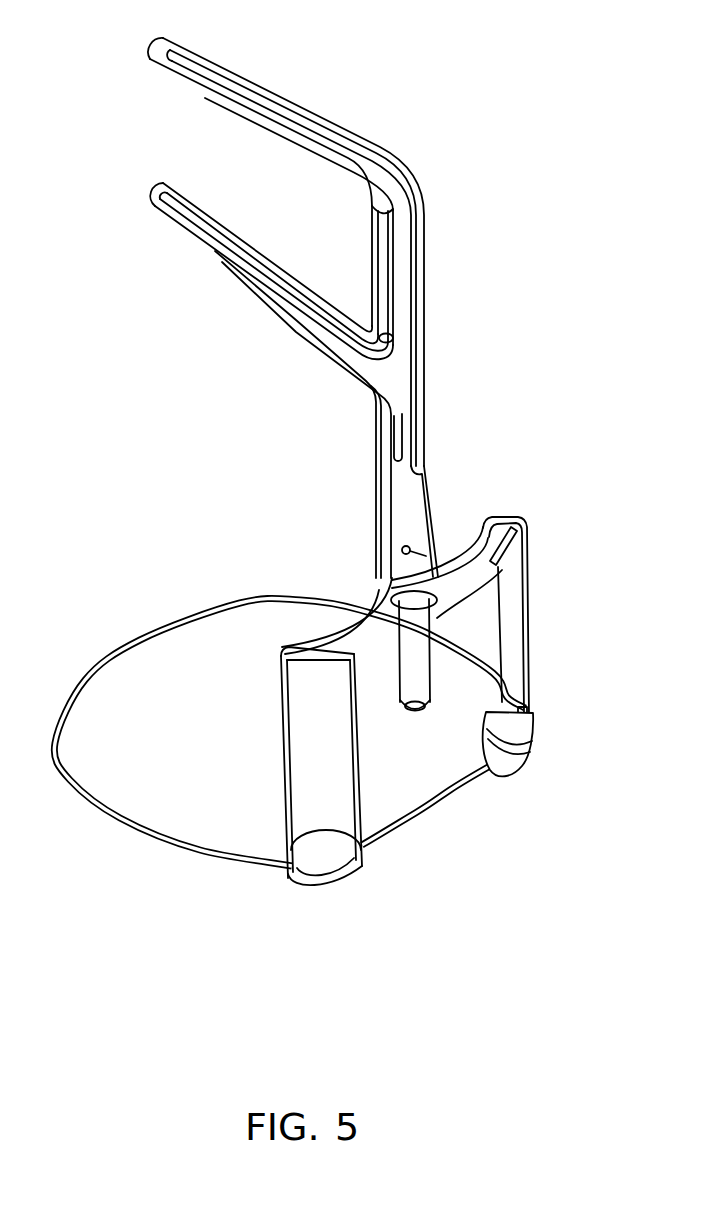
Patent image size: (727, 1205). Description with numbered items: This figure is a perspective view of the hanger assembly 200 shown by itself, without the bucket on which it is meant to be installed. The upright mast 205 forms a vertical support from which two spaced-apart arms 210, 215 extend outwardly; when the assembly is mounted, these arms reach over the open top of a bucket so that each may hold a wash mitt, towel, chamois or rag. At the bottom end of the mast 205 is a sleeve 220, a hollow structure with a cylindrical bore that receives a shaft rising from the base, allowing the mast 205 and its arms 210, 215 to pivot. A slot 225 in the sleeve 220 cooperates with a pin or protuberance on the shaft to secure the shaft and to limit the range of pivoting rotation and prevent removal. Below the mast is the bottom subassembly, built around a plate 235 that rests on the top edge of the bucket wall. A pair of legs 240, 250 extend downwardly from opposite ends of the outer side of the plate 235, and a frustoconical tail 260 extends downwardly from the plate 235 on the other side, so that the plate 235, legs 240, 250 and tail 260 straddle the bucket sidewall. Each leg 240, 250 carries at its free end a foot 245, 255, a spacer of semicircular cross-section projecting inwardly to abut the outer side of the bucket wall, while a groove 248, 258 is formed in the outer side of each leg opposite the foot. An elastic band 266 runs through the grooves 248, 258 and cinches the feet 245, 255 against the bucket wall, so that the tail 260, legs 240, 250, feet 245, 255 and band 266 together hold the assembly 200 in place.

The hanger assembly 200 is at (458, 330).
The mast 205 is at (425, 256).
The arm 210 is at (197, 90).
The arm 215 is at (207, 240).
The sleeve 220 is at (377, 517).
The slot 225 is at (437, 557).
The plate 235 is at (463, 590).
The leg 240 is at (282, 770).
The foot 245 is at (317, 868).
The groove 248 is at (350, 845).
The leg 250 is at (530, 613).
The foot 255 is at (507, 755).
The groove 258 is at (533, 727).
The tail 260 is at (435, 687).
The band 266 is at (72, 680).